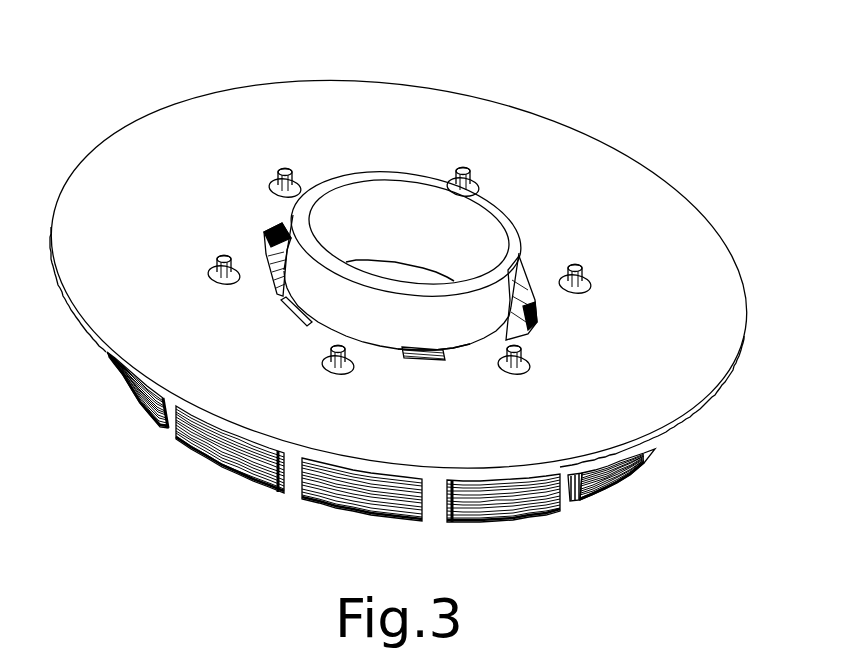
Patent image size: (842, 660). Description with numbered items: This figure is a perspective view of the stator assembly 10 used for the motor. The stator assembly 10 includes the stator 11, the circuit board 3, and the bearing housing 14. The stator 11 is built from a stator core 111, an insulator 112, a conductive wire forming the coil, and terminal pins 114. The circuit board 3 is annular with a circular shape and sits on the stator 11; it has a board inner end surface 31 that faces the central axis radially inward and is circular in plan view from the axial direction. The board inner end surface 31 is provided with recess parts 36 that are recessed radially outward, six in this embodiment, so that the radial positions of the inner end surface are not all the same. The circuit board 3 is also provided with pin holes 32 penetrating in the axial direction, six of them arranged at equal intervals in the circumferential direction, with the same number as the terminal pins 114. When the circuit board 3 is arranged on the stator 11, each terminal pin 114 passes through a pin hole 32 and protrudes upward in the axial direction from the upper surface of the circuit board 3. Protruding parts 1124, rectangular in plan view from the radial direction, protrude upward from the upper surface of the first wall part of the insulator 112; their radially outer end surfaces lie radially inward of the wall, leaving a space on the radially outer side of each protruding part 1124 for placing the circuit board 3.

The stator assembly 10 is at (588, 99).
The circuit board 3 is at (683, 392).
The stator 11 is at (377, 466).
The stator core 111 is at (538, 518).
The bearing housing 14 is at (383, 197).
The insulator 112 is at (280, 238).
The board inner end surface 31 is at (521, 263).
The recess part 36 is at (418, 362).
The protruding part 1124 is at (445, 368).
The terminal pin 114 is at (592, 277).
The pin hole 32 is at (533, 366).